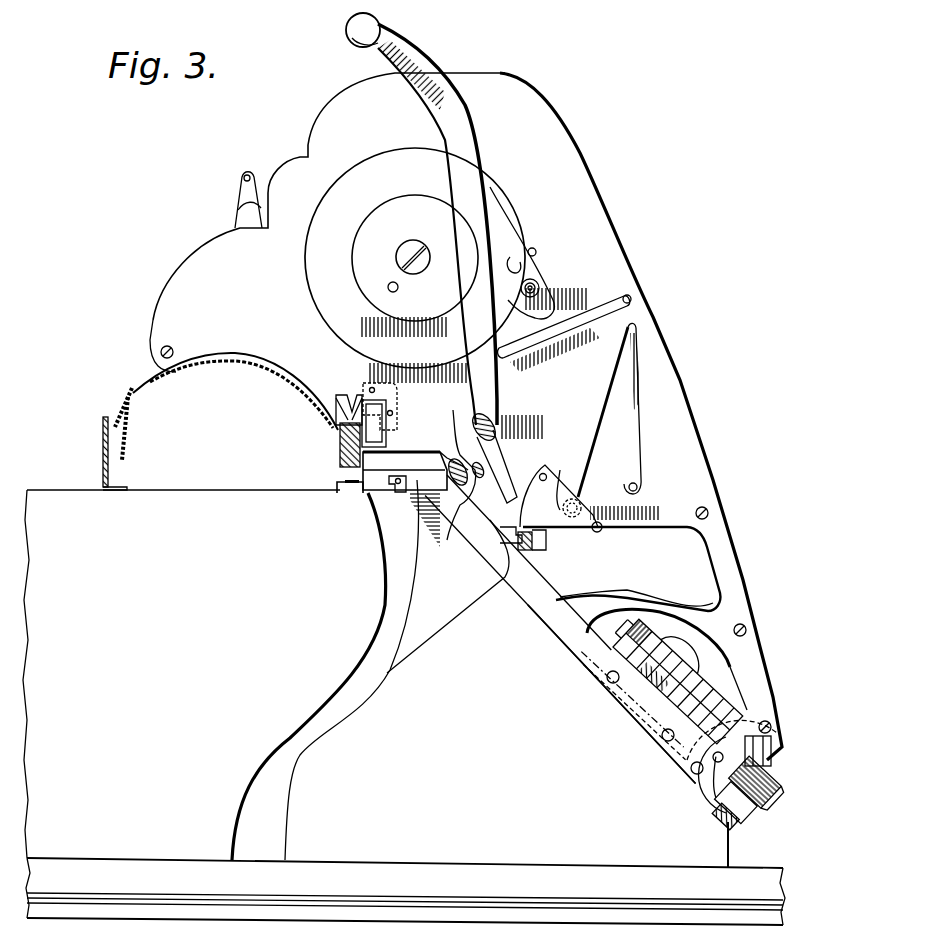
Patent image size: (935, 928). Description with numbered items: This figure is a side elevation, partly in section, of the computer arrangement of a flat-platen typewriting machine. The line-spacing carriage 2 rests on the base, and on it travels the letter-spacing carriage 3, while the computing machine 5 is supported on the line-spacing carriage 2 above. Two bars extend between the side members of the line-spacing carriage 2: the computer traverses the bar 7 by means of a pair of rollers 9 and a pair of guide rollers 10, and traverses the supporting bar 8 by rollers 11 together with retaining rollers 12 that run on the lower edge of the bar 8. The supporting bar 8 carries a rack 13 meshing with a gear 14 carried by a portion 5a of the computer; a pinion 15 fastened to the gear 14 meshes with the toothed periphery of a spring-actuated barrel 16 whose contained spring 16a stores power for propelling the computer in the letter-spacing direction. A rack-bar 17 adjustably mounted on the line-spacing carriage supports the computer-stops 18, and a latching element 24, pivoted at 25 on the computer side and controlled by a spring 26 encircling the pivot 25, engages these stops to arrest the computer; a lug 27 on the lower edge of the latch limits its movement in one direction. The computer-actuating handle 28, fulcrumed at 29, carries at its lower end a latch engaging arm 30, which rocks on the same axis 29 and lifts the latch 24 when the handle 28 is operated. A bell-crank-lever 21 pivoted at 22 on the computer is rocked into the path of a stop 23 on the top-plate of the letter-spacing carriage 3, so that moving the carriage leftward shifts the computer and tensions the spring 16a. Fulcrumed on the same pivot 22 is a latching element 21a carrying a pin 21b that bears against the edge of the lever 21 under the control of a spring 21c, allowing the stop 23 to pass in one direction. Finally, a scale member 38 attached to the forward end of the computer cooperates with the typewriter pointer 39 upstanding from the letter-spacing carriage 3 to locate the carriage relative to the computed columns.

The line-spacing carriage 2 is at (344, 864).
The letter-spacing carriage 3 is at (181, 674).
The computing machine 5 is at (597, 241).
The portion of the computer 5a is at (748, 717).
The bar 7 is at (340, 453).
The supporting bar 8 is at (761, 790).
The rollers 9 is at (333, 430).
The guide rollers 10 is at (386, 438).
The rollers 11 is at (771, 757).
The retaining rollers 12 is at (718, 810).
The rack 13 is at (712, 795).
The gear 14 is at (682, 770).
The pinion 15 is at (718, 701).
The spring-actuated barrel 16 is at (642, 720).
The spring 16a is at (650, 612).
The rack-bar 17 is at (527, 552).
The computer-stops 18 is at (547, 540).
The bell-crank-lever 21 is at (432, 452).
The latching element 21a is at (372, 495).
The pin 21b is at (482, 530).
The spring 21c is at (453, 420).
The pivot 22 is at (421, 538).
The stop 23 is at (382, 528).
The latching element 24 is at (560, 470).
The pivot 25 is at (594, 514).
The spring 26 is at (584, 496).
The lug 27 is at (598, 531).
The computer-actuating handle 28 is at (478, 237).
The fulcrum 29 is at (505, 426).
The latch engaging arm 30 is at (500, 472).
The scale member 38 is at (137, 386).
The typewriter pointer 39 is at (102, 441).